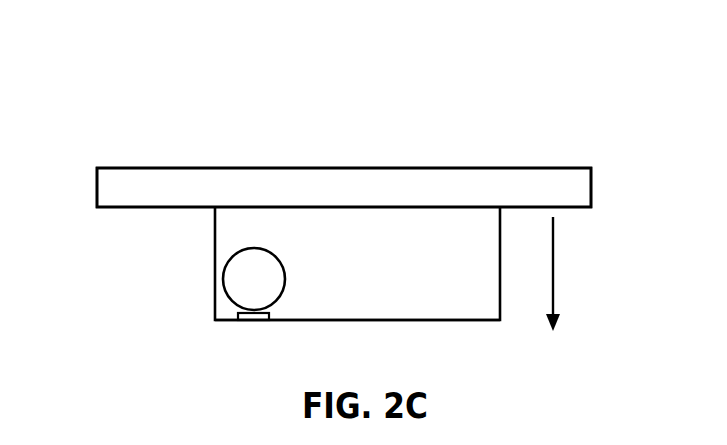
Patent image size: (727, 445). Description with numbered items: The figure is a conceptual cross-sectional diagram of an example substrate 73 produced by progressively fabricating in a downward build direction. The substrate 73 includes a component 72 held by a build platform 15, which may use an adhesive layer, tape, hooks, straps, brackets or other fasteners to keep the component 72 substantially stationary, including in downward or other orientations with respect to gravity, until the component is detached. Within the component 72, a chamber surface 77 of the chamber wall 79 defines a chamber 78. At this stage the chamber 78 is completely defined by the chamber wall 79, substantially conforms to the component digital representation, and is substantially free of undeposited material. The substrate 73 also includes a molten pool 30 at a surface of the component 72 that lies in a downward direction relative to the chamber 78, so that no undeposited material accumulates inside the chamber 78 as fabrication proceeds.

The substrate 73 is at (131, 99).
The build platform 15 is at (544, 169).
The component 72 is at (215, 240).
The chamber 78 is at (253, 280).
The molten pool 30 is at (258, 321).
The chamber wall 79 is at (227, 310).
The chamber surface 77 is at (285, 281).